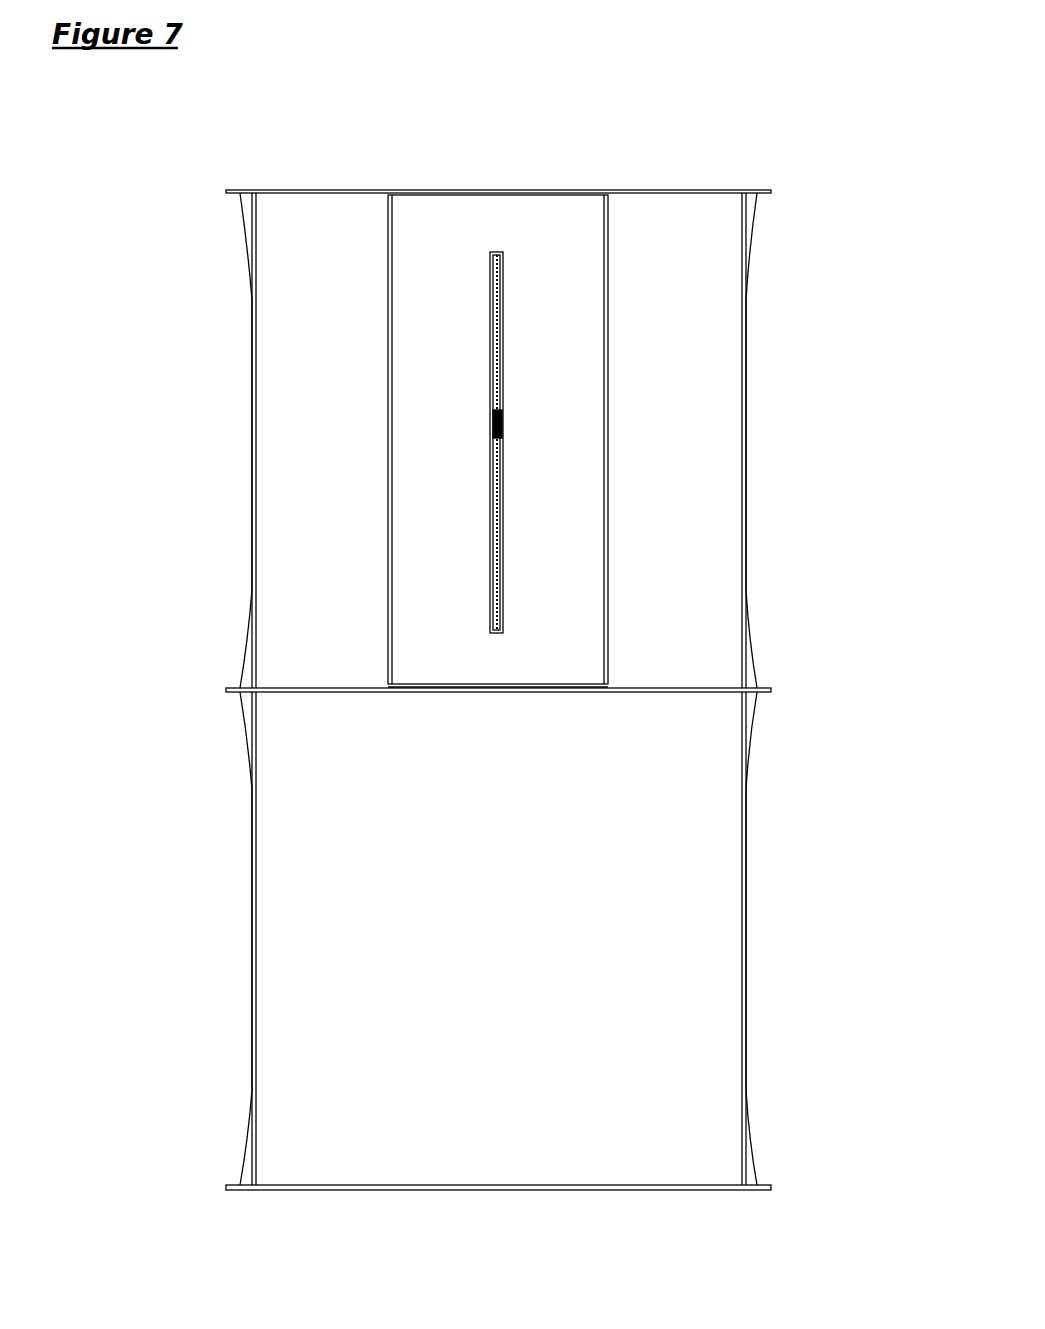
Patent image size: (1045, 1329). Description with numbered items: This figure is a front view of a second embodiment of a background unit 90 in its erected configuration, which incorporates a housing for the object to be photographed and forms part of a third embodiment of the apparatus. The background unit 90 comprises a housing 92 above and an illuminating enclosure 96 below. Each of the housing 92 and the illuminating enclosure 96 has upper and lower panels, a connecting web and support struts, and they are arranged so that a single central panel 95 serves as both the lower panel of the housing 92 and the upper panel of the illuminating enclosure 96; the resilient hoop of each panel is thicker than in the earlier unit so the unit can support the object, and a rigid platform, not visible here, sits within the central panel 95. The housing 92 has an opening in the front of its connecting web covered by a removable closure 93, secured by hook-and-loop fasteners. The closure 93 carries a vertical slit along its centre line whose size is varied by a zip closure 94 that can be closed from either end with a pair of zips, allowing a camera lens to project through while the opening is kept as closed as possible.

The background unit 90 is at (785, 135).
The housing 92 is at (700, 408).
The removable closure 93 is at (433, 210).
The zip closure 94 is at (498, 300).
The central panel 95 is at (230, 687).
The illuminating enclosure 96 is at (692, 943).